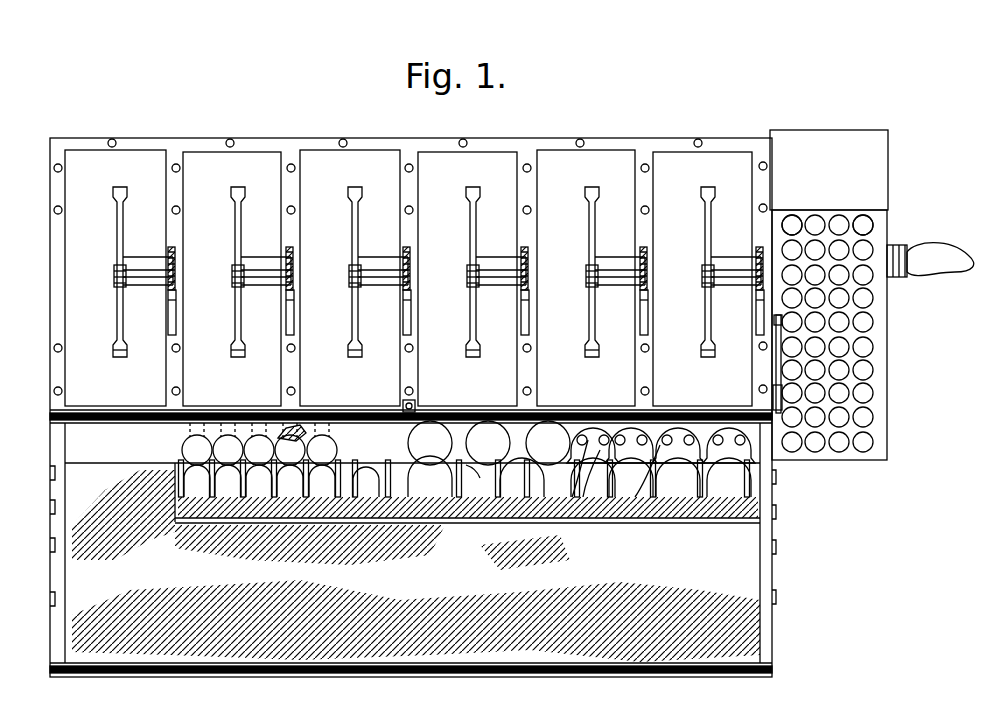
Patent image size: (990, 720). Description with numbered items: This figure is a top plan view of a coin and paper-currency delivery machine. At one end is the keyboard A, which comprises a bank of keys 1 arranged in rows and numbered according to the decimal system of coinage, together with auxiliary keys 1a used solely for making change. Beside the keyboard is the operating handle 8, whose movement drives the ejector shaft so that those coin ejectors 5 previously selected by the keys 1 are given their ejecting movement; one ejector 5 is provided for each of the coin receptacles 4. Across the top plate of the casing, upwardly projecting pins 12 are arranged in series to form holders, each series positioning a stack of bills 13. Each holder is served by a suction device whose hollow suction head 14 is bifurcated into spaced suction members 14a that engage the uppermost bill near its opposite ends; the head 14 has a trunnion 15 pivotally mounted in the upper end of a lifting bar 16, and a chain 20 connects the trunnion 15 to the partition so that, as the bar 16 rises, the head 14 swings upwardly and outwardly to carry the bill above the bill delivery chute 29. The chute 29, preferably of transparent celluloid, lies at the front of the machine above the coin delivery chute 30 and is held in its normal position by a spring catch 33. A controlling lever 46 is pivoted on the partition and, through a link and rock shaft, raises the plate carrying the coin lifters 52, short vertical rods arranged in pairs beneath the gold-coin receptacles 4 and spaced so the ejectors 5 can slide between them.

The keys 1 is at (875, 378).
The auxiliary keys 1a is at (792, 220).
The coin receptacles 4 is at (485, 465).
The coin ejectors 5 is at (190, 432).
The operating handle 8 is at (928, 258).
The pins 12 is at (114, 141).
The stack of bills 13 is at (550, 152).
The suction head 14 is at (237, 264).
The suction members 14a is at (358, 330).
The trunnion 15 is at (145, 268).
The lifting bar 16 is at (286, 298).
The chain 20 is at (175, 272).
The bill delivery chute 29 is at (535, 665).
The coin delivery chute 30 is at (420, 524).
The spring catch 33 is at (462, 459).
The controlling lever 46 is at (778, 393).
The coin lifters 52 is at (596, 470).
The keyboard A is at (878, 417).